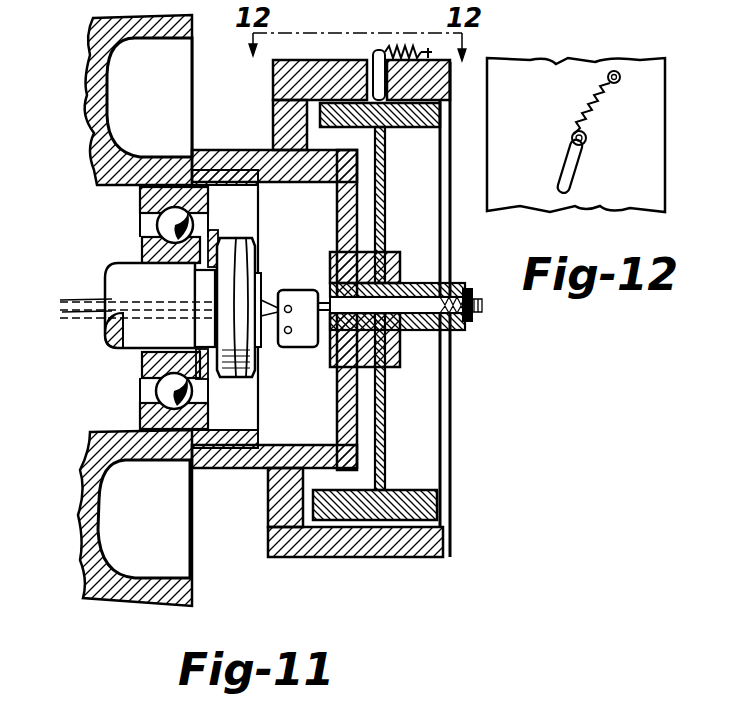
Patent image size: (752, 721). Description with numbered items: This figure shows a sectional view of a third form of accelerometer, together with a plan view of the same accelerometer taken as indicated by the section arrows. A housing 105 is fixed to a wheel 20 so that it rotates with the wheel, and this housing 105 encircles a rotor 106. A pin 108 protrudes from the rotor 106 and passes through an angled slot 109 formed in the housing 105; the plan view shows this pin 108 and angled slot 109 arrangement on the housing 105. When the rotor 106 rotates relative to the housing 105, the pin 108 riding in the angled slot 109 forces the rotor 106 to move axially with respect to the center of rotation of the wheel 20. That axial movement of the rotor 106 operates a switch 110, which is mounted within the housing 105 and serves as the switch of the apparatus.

In FIG. 11, the wheel 20 is at (92, 78).
In FIG. 11, the housing 105 is at (283, 118).
In FIG. 12, the housing 105 is at (545, 123).
In FIG. 11, the rotor 106 is at (420, 508).
In FIG. 11, the pin 108 is at (378, 52).
In FIG. 12, the pin 108 is at (590, 139).
In FIG. 11, the angled slot 109 is at (368, 62).
In FIG. 12, the angled slot 109 is at (572, 162).
In FIG. 11, the switch 110 is at (310, 292).